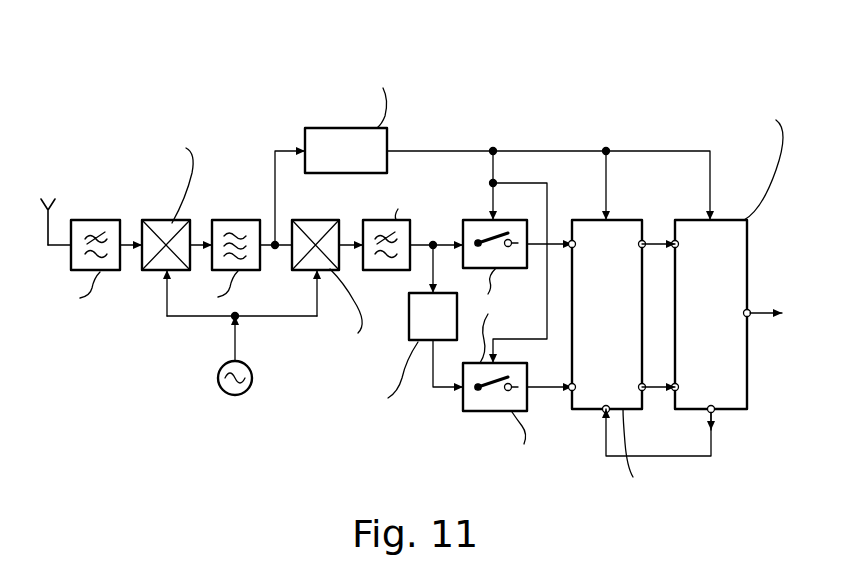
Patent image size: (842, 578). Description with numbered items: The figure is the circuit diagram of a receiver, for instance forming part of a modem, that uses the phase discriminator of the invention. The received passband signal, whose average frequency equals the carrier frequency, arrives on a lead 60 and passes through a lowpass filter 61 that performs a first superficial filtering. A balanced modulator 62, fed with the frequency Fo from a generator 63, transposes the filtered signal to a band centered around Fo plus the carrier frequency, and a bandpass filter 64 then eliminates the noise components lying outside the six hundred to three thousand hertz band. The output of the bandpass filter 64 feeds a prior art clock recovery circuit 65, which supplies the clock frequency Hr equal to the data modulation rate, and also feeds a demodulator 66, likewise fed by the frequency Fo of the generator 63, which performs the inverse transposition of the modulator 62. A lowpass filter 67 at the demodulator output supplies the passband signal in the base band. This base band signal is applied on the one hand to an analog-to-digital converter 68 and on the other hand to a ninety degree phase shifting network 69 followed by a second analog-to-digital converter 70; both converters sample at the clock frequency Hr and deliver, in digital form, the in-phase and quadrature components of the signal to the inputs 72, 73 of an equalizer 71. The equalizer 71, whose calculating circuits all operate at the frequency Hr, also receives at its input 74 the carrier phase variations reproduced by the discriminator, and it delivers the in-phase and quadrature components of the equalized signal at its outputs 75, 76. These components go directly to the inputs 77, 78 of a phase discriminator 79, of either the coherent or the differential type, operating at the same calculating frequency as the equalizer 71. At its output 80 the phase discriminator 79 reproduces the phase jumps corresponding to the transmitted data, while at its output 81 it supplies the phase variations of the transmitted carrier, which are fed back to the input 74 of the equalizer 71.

The lead 60 is at (52, 209).
The lowpass filter 61 is at (89, 220).
The balanced modulator 62 is at (159, 220).
The generator 63 is at (226, 392).
The bandpass filter 64 is at (233, 220).
The clock recovery circuit 65 is at (322, 128).
The demodulator 66 is at (315, 220).
The lowpass filter 67 is at (383, 220).
The analog-to-digital converter 68 is at (461, 220).
The 90° phase shifting network 69 is at (409, 323).
The analog-to-digital converter 70 is at (478, 411).
The equalizer 71 is at (636, 220).
The input 72 is at (573, 246).
The input 73 is at (572, 386).
The input 74 is at (603, 412).
The output 75 is at (642, 246).
The output 76 is at (642, 390).
The input 77 is at (675, 241).
The input 78 is at (673, 386).
The phase discriminator 79 is at (736, 220).
The output 80 is at (748, 313).
The output 81 is at (713, 412).